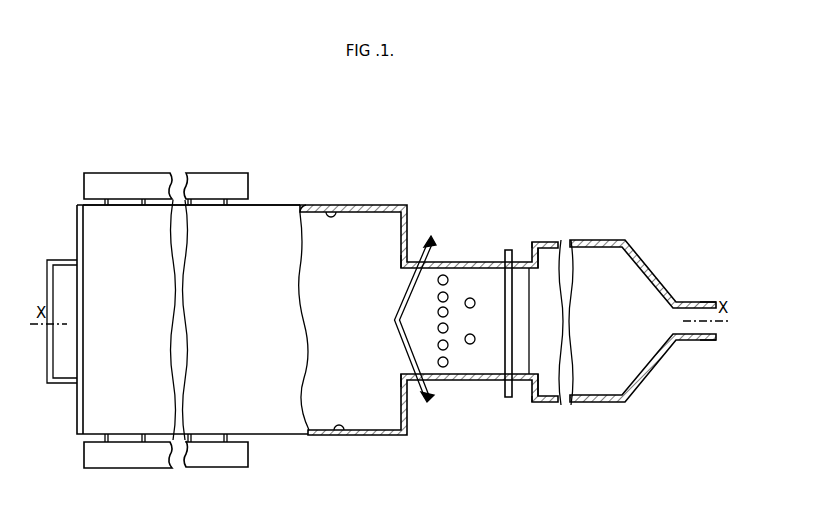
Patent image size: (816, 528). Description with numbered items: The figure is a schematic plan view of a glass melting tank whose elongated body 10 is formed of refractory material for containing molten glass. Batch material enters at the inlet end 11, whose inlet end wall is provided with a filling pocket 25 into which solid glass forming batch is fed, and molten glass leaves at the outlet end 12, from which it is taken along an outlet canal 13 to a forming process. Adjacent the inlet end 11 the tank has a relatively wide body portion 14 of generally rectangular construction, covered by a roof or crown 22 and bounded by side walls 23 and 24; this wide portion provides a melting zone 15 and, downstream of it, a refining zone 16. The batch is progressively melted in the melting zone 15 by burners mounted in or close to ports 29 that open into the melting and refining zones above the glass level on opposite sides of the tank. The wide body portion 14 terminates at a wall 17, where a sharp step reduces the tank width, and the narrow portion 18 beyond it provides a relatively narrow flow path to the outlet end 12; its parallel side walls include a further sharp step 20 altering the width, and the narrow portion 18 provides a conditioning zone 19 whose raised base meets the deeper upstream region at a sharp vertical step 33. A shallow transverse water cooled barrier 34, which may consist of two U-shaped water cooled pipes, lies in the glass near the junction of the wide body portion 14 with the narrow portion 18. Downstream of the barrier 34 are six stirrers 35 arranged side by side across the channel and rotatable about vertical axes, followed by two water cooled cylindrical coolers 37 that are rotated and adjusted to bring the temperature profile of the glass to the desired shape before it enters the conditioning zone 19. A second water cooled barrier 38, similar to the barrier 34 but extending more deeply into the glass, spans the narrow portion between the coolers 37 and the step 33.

The elongated body 10 is at (360, 204).
The inlet end 11 is at (77, 397).
The outlet end 12 is at (660, 370).
The outlet canal 13 is at (697, 336).
The wide body portion 14 is at (297, 199).
The melting zone 15 is at (134, 298).
The refining zone 16 is at (239, 298).
The wall 17 is at (407, 238).
The narrow portion 18 is at (510, 428).
The conditioning zone 19 is at (553, 292).
The sharp step 20 is at (537, 385).
The roof or crown 22 is at (255, 226).
The side wall 23 is at (333, 208).
The side wall 24 is at (340, 437).
The filling pocket 25 is at (57, 361).
The ports 29 is at (213, 200).
The sharp vertical step 33 is at (529, 355).
The water cooled barrier 34 is at (403, 303).
The stirrers 35 is at (448, 293).
The water cooled cylindrical coolers 37 is at (475, 343).
The second water cooled barrier 38 is at (513, 252).